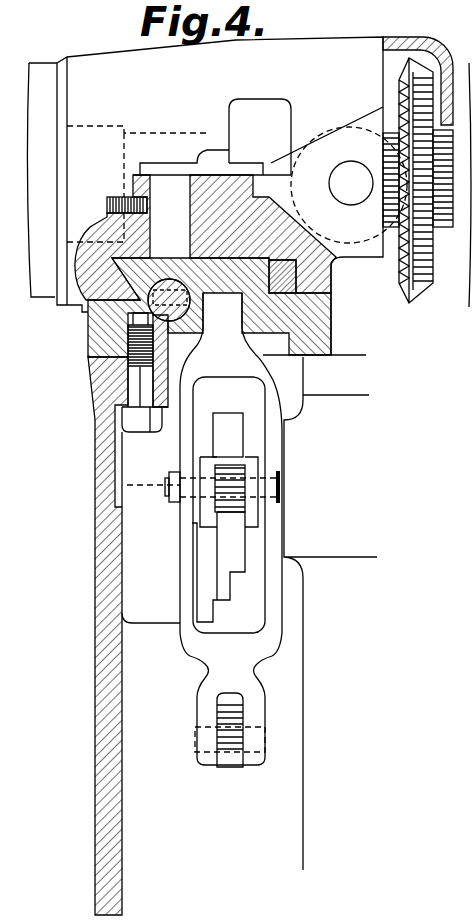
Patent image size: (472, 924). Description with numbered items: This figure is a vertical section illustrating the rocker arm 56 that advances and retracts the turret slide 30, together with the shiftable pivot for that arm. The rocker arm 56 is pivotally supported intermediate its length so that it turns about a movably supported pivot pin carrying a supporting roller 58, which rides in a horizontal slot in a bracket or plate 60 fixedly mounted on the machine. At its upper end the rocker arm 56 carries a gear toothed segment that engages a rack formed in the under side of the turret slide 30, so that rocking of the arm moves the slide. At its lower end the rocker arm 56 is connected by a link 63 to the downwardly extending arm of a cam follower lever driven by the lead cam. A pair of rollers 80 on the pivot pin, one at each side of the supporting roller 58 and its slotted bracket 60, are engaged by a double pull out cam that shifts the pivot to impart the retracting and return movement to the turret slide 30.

The turret slide 30 is at (273, 212).
The rocker arm 56 is at (271, 387).
The supporting roller 58 is at (230, 513).
The bracket or plate 60 is at (229, 428).
The link 63 is at (240, 718).
The rollers 80 is at (252, 472).